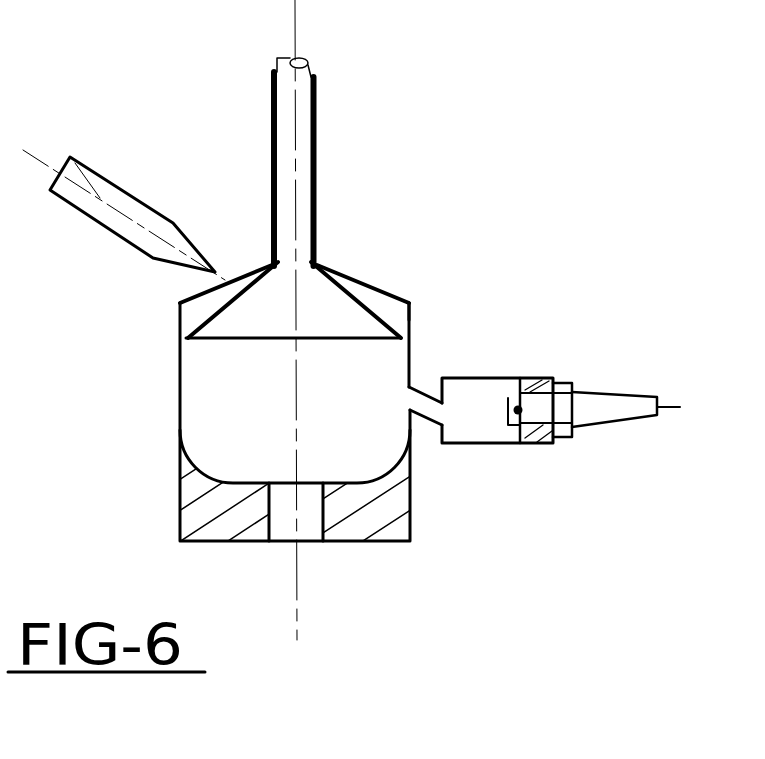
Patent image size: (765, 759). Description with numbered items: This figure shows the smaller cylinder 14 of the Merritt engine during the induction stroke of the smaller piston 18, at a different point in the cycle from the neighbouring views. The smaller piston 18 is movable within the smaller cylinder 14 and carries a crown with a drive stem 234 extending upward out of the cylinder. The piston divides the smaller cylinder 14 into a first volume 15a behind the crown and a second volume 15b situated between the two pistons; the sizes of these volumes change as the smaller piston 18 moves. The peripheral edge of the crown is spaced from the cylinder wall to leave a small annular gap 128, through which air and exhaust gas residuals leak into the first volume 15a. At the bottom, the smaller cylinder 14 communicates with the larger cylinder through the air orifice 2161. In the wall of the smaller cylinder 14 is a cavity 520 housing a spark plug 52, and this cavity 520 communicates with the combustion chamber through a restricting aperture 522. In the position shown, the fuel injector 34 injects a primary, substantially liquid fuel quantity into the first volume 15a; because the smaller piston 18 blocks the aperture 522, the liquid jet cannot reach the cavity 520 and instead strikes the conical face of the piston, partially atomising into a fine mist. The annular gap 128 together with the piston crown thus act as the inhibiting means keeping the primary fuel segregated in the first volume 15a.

The smaller cylinder 14 is at (330, 258).
The first volume 15a is at (375, 300).
The second volume 15b is at (222, 420).
The smaller piston 18 is at (225, 325).
The annular gap 128 is at (192, 345).
The drive stem 234 is at (290, 140).
The fuel injector 34 is at (72, 157).
The cavity 520 is at (478, 412).
The restricting aperture 522 is at (425, 407).
The spark plug 52 is at (600, 406).
The air orifice 2161 is at (291, 527).